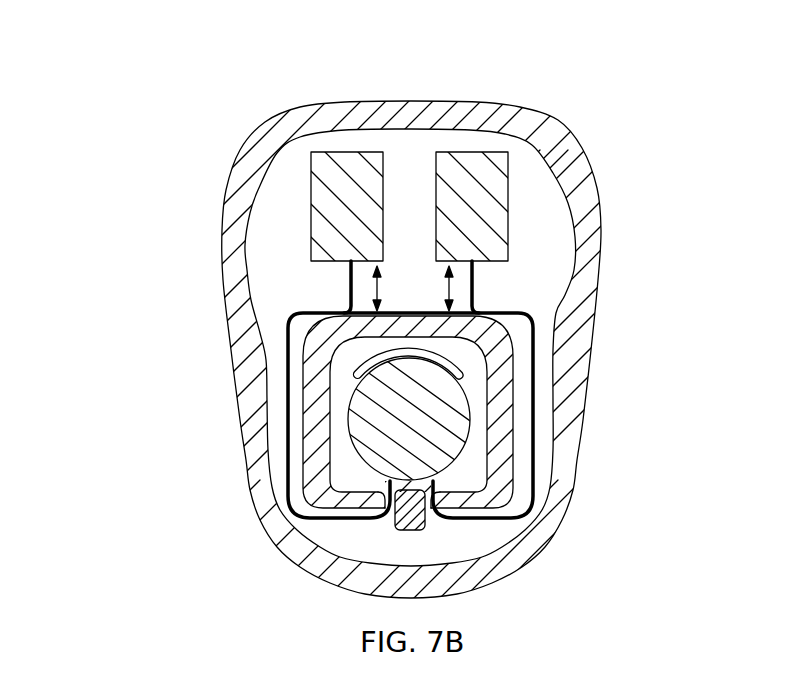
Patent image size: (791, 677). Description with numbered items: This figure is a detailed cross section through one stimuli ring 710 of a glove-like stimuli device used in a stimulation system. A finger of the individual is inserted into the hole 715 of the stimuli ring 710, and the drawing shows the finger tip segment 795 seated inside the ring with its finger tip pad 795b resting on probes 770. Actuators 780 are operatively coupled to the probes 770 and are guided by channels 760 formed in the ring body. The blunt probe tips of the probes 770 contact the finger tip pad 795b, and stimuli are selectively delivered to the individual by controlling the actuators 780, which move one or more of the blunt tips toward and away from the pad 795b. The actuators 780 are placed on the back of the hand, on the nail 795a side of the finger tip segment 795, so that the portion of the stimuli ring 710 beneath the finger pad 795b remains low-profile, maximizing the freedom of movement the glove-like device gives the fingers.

The stimuli ring 710 is at (170, 104).
The hole 715 is at (480, 397).
The channels 760 is at (275, 438).
The probes 770 is at (305, 312).
The actuators 780 is at (348, 153).
The finger tip segment 795 is at (385, 378).
The nail 795a is at (392, 350).
The finger tip pad 795b is at (430, 518).